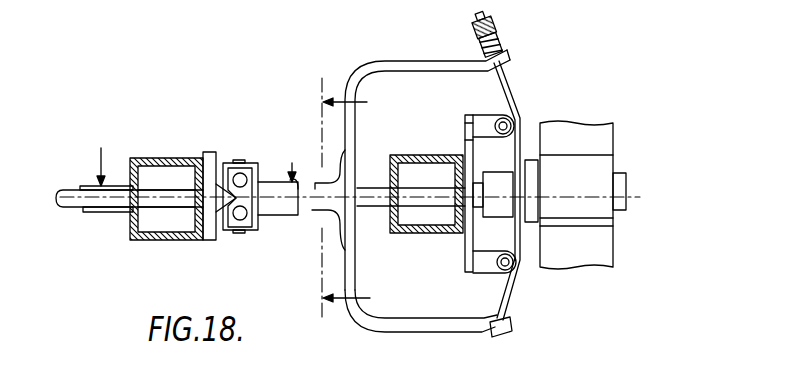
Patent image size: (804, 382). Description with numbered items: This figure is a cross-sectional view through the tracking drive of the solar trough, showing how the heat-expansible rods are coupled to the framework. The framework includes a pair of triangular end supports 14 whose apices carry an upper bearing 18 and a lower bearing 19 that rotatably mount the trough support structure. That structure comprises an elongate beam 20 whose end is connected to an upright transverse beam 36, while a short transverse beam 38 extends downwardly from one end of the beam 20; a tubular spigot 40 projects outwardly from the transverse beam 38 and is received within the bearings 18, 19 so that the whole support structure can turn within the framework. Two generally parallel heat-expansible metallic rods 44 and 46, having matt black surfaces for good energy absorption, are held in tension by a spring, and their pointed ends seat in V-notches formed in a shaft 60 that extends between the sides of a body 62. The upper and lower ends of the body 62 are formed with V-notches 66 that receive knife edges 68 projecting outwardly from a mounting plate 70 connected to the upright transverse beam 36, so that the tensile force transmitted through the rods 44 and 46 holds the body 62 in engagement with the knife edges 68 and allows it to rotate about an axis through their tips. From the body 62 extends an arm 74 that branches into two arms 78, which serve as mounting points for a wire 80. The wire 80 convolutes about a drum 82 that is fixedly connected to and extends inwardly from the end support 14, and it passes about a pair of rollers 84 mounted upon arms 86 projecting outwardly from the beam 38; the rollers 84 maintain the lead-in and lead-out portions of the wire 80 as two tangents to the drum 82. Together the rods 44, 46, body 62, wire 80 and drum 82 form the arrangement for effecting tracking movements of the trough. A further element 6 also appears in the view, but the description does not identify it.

The rod 6 is at (68, 207).
The triangular end support 14 is at (593, 248).
The upper bearing 18 is at (597, 183).
The lower bearing 19 is at (116, 141).
The elongate beam 20 is at (403, 112).
The upright transverse beam 36 is at (153, 241).
The short transverse beam 38 is at (433, 234).
The tubular spigot 40 is at (480, 174).
The heat expansible metallic rod 44 is at (85, 184).
The heat expansible metallic rod 46 is at (90, 212).
The shaft 60 is at (242, 162).
The body 62 is at (254, 162).
The V-notches 66 is at (252, 233).
The knife edges 68 is at (195, 212).
The mounting plate 70 is at (212, 151).
The arm 74 is at (280, 216).
The arms 78 is at (506, 56).
The wire 80 is at (511, 98).
The drum 82 is at (503, 204).
The rollers 84 is at (520, 125).
The arms 86 is at (467, 127).